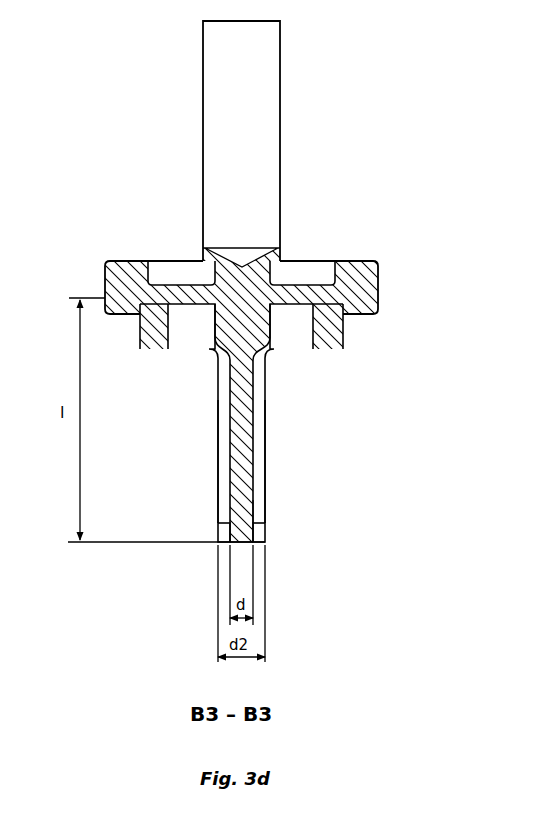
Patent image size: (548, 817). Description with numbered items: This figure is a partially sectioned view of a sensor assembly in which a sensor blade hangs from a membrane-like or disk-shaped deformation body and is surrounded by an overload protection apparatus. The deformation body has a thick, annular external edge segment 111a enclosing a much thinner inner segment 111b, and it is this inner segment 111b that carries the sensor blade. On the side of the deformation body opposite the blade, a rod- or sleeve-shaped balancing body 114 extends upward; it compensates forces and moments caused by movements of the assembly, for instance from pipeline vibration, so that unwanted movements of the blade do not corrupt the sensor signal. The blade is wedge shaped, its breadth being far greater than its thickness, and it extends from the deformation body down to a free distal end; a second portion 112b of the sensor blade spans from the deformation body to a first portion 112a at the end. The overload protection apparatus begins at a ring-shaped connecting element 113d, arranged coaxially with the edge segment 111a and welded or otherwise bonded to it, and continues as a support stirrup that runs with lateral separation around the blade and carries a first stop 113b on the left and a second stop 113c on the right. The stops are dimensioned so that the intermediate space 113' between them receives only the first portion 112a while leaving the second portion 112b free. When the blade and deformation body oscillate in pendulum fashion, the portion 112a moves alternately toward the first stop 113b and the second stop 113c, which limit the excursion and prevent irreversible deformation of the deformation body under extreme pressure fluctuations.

The balancing body 114 is at (188, 72).
The external edge segment 111a is at (115, 262).
The inner segment 111b is at (168, 284).
The connecting element 113d is at (334, 337).
The second portion of the sensor blade 112b is at (248, 402).
The first portion of the sensor blade 112a is at (241, 527).
The intermediate space 113' is at (295, 503).
The first stop 113b is at (222, 534).
The second stop 113c is at (260, 534).